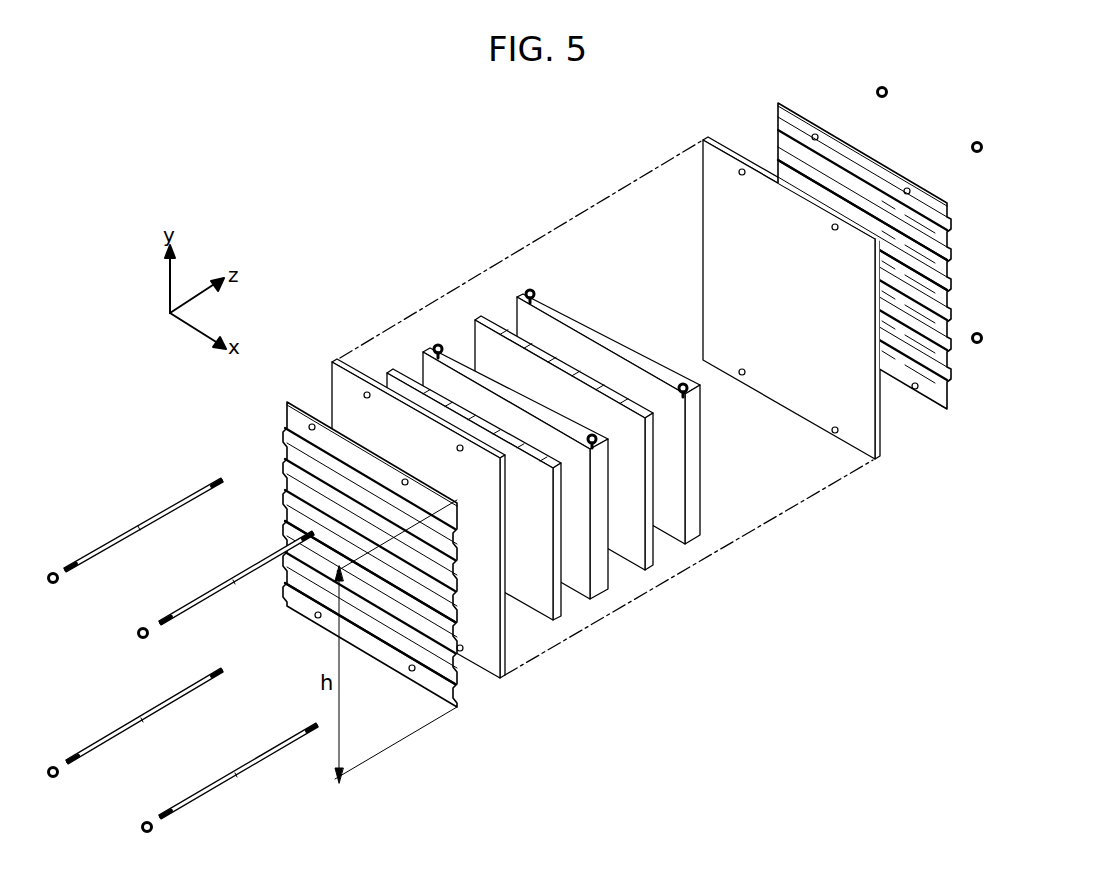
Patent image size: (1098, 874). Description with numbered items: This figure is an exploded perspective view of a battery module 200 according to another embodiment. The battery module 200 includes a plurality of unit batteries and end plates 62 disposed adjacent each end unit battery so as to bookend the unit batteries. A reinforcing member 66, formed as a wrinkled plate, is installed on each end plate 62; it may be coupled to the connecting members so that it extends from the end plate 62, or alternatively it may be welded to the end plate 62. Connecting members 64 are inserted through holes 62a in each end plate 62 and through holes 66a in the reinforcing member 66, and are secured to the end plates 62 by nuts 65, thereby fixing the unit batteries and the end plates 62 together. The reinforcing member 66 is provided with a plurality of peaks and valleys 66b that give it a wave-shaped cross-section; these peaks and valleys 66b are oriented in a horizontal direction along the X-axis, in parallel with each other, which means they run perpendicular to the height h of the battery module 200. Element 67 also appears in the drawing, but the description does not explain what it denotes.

The battery module 200 is at (457, 268).
The end plate 62 is at (860, 445).
The hole 62a is at (365, 392).
The connecting member 64 is at (118, 535).
The nut 65 is at (890, 87).
The reinforcing member 66 is at (958, 358).
The hole 66a is at (309, 426).
The peaks and valleys 66b is at (283, 527).
The bolt 67 is at (606, 447).